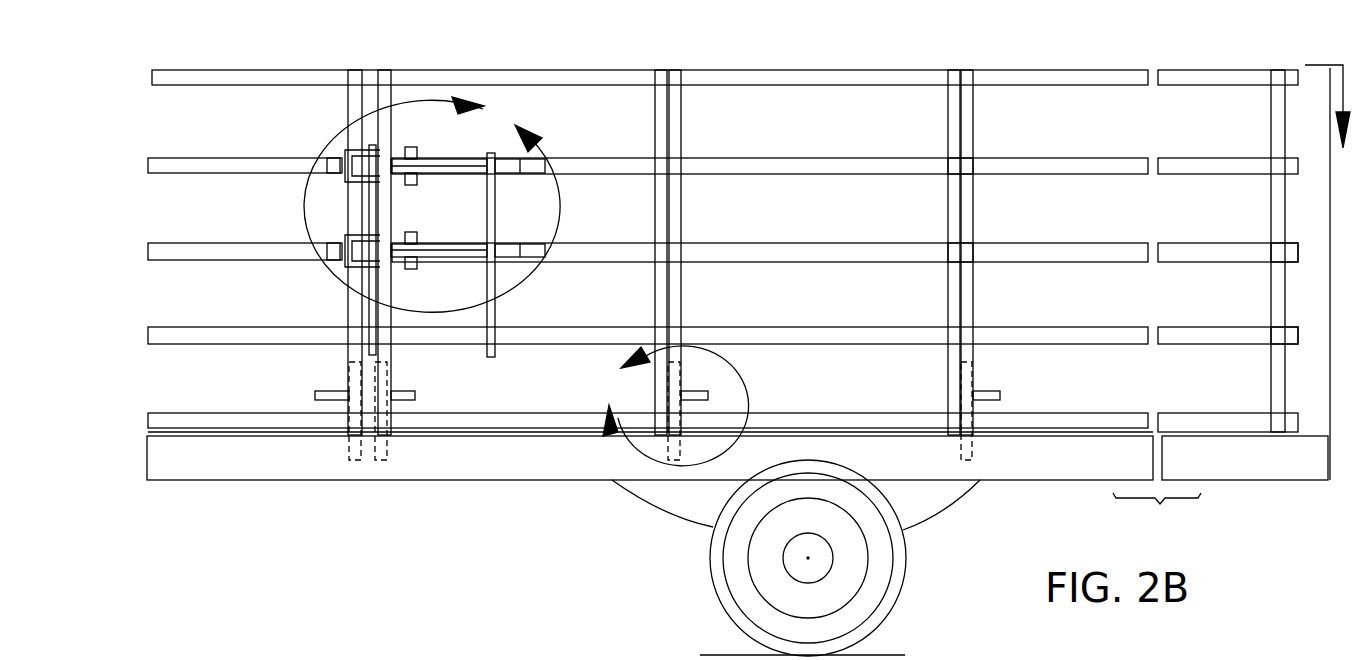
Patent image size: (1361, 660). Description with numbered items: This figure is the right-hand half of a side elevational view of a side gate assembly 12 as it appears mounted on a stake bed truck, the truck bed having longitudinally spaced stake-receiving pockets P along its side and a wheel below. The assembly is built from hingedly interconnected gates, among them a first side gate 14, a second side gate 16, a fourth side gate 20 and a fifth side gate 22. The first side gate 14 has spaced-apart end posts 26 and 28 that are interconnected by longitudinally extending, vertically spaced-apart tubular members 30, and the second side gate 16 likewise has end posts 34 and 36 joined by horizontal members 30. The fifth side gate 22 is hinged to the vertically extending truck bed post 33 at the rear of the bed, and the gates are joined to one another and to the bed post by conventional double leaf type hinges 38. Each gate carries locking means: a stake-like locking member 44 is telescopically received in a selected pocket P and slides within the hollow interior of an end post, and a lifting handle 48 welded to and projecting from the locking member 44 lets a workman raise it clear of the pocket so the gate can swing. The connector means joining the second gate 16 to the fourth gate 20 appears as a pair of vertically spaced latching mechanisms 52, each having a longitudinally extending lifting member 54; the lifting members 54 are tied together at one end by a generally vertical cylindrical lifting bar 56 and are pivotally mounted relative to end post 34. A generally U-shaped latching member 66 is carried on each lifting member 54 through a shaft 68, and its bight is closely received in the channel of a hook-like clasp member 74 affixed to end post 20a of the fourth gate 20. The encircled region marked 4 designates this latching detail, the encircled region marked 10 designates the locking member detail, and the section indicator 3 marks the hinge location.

The side gate assembly 12 is at (858, 61).
The first side gate 14 is at (780, 70).
The second side gate 16 is at (560, 70).
The fourth side gate 20 is at (240, 70).
The end post 20a is at (355, 92).
The fifth side gate 22 is at (1120, 72).
The end post 26 is at (672, 125).
The end post 28 is at (950, 122).
The tubular members 30 is at (242, 166).
The truck bed post 33 is at (1293, 212).
The end post 34 is at (385, 98).
The end post 36 is at (658, 123).
The double leaf type hinge 38 is at (968, 167).
The locking member 44 is at (349, 371).
The lifting handle 48 is at (315, 395).
The latching mechanism 52 is at (510, 237).
The lifting member 54 is at (444, 165).
The lifting bar 56 is at (495, 312).
The latching member 66 is at (350, 148).
The shaft 68 is at (414, 184).
The clasp member 74 is at (337, 169).
The stake-receiving pockets P is at (385, 462).
The section line 3 is at (1327, 90).
The detail circle 4 is at (432, 204).
The detail circle 10 is at (676, 406).